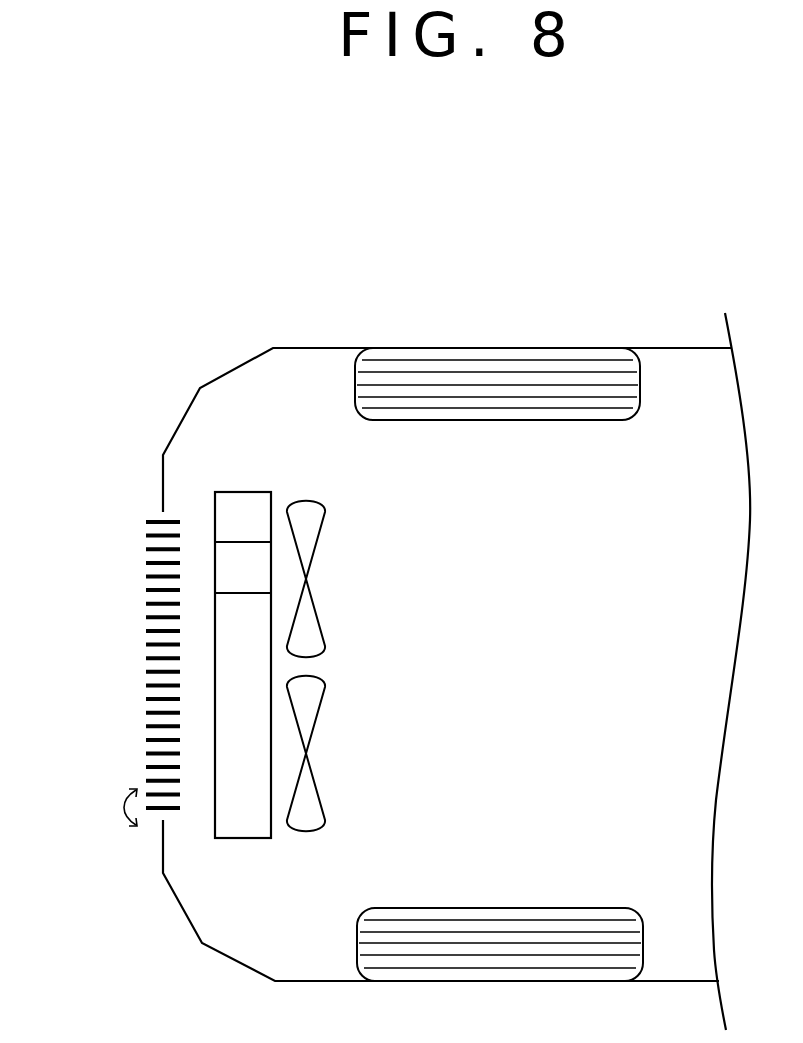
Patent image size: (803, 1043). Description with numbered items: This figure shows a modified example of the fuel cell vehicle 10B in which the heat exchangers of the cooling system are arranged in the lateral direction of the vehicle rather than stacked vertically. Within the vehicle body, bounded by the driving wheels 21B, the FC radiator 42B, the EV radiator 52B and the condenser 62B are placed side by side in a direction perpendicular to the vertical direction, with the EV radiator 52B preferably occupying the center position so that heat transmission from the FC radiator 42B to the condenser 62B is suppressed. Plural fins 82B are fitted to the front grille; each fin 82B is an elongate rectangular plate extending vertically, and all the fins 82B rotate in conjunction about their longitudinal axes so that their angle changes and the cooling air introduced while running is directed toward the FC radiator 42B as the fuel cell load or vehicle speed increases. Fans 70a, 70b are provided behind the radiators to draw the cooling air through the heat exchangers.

The fuel cell vehicle 10B is at (646, 348).
The driving wheel 21B is at (462, 420).
The fins 82B is at (152, 535).
The FC radiator 42B is at (277, 673).
The EV radiator 52B is at (214, 567).
The condenser 62B is at (245, 492).
The fan 70a is at (318, 530).
The fan 70b is at (318, 718).